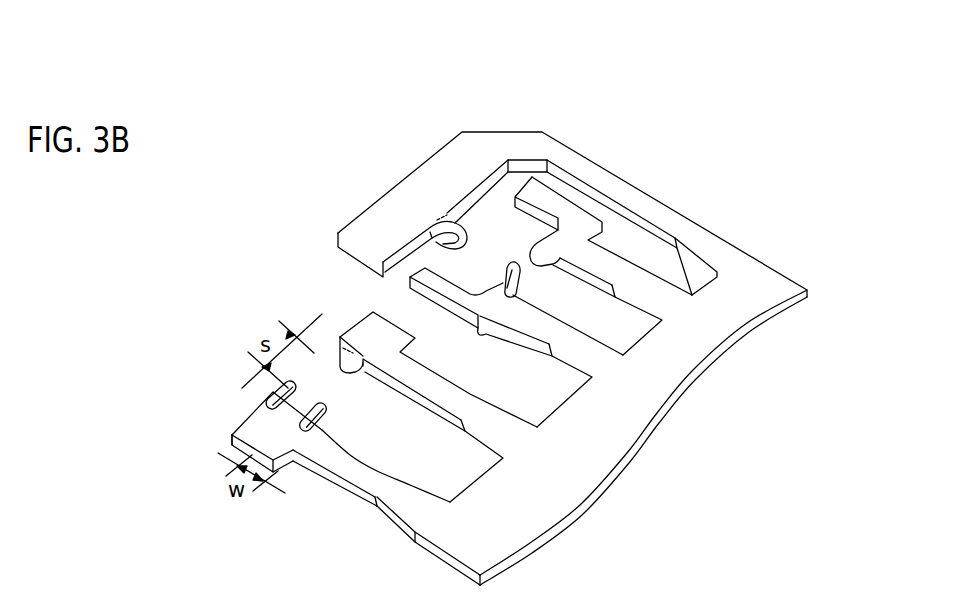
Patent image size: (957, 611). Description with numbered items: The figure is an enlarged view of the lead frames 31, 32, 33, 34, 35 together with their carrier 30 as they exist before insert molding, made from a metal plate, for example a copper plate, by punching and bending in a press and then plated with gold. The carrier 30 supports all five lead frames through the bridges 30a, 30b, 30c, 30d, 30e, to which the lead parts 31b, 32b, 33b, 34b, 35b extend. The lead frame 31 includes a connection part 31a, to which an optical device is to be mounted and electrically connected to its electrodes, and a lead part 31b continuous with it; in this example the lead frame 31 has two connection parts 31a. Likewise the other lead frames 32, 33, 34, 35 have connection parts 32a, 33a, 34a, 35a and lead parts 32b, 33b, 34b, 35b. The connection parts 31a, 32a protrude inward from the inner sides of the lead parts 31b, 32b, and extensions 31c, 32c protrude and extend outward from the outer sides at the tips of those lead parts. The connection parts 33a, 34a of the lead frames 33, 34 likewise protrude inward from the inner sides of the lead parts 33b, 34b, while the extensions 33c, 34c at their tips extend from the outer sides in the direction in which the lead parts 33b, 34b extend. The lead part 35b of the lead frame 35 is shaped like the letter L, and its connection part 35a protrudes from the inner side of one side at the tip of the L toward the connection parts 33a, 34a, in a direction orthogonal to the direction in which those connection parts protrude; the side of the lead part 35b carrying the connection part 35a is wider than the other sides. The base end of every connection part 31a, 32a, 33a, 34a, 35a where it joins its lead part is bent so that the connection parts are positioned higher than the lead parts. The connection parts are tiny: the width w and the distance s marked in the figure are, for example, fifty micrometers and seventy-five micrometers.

The carrier 30 is at (775, 280).
The bridge 30a is at (369, 500).
The bridge 30b is at (460, 420).
The bridge 30c is at (549, 346).
The bridge 30d is at (613, 287).
The bridge 30e is at (682, 223).
The lead frame 31 is at (249, 462).
The connection part 31a is at (280, 390).
The lead part 31b is at (325, 468).
The extension 31c is at (245, 437).
The lead frame 32 is at (384, 332).
The connection part 32a is at (335, 362).
The lead part 32b is at (406, 384).
The extension 32c is at (352, 317).
The lead frame 33 is at (459, 234).
The connection part 33a is at (511, 260).
The lead part 33b is at (505, 326).
The extension 33c is at (412, 265).
The lead frame 34 is at (593, 175).
The connection part 34a is at (531, 250).
The lead part 34b is at (576, 267).
The extension 34c is at (560, 205).
The lead frame 35 is at (553, 160).
The connection part 35a is at (455, 212).
The lead part 35b is at (657, 213).